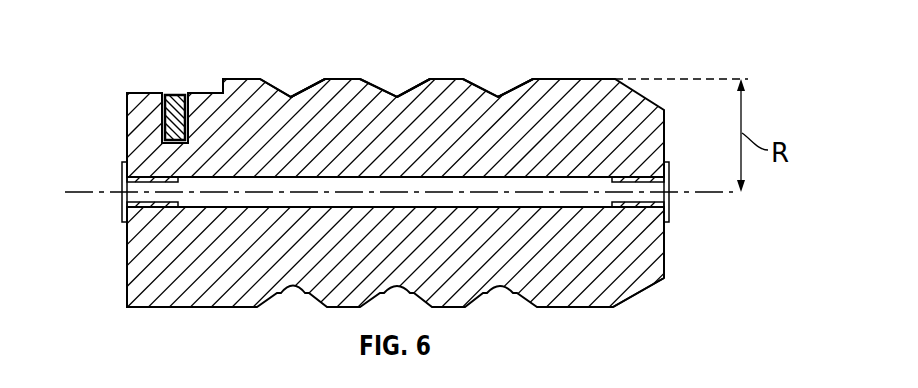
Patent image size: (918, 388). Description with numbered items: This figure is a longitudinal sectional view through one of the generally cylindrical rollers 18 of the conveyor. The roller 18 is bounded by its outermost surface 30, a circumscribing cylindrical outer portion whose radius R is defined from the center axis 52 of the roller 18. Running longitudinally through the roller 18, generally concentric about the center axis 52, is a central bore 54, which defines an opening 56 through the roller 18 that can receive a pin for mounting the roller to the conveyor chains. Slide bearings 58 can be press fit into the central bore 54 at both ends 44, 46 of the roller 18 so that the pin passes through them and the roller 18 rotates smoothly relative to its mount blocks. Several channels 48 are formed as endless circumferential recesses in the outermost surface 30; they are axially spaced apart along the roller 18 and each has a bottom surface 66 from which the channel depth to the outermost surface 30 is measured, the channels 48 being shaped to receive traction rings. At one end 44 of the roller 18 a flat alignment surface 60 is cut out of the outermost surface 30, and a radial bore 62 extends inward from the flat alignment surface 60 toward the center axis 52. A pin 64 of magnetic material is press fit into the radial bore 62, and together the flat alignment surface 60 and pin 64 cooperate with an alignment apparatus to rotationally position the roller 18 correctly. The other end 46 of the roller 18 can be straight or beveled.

The roller 18 is at (639, 37).
The outermost surface 30 is at (244, 308).
The end of the roller 44 is at (148, 308).
The other end of the roller 46 is at (639, 292).
The channels 48 is at (284, 78).
The center axis 52 is at (712, 194).
The central bore 54 is at (543, 208).
The opening 56 is at (124, 191).
The slide bearings 58 is at (125, 223).
The flat alignment surface 60 is at (143, 88).
The radial bore 62 is at (168, 125).
The pin of magnetic material 64 is at (173, 93).
The bottom surface of the channel 66 is at (296, 95).